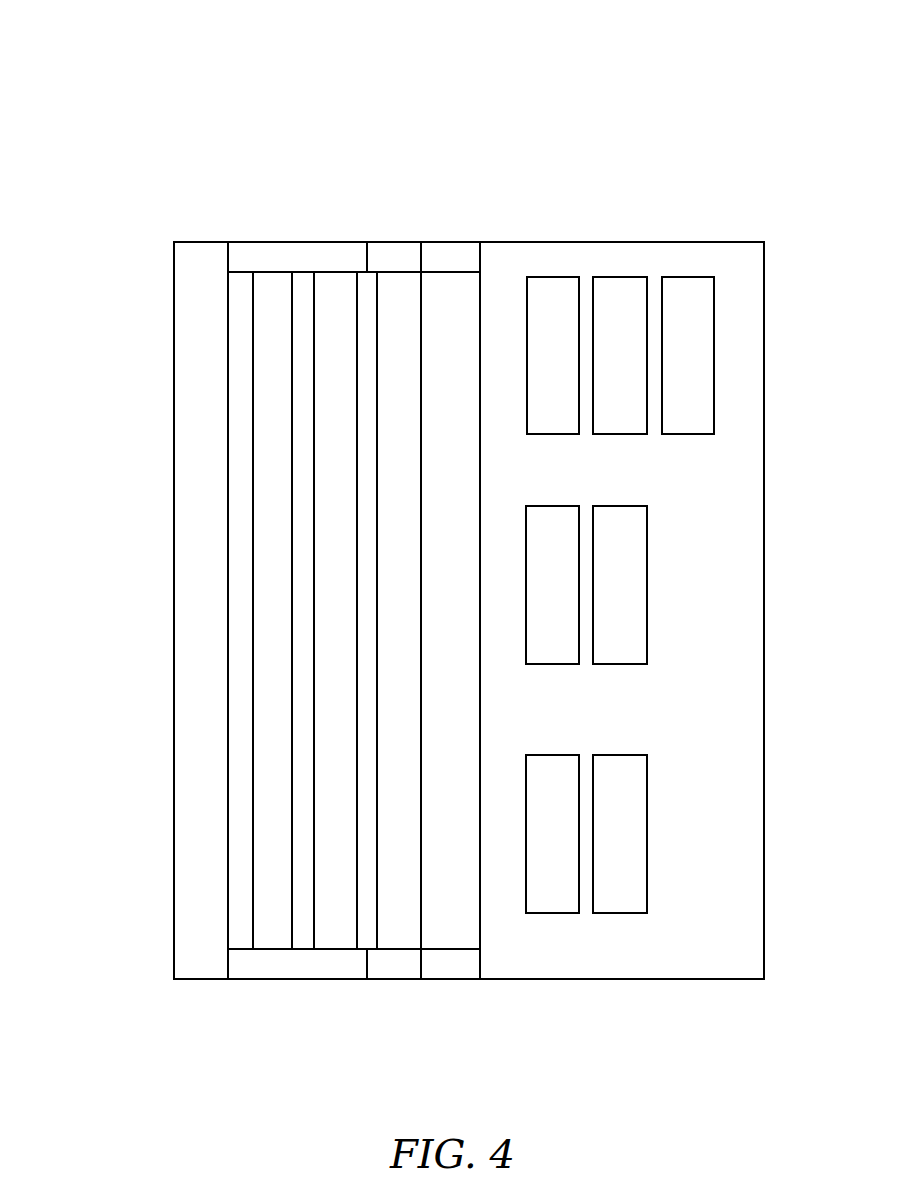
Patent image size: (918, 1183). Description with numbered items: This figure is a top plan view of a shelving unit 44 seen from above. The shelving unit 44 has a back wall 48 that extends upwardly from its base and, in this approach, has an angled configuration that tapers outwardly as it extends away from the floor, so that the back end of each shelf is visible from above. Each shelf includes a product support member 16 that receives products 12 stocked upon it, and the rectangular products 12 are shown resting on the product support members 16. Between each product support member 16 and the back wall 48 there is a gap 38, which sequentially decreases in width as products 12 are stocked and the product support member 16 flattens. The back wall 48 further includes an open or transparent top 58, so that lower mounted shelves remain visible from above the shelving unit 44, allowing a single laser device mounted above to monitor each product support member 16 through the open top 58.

The products 12 is at (548, 277).
The product support member 16 is at (272, 296).
The gap 38 is at (305, 297).
The shelving unit 44 is at (694, 98).
The back wall 48 is at (400, 258).
The open or transparent top 58 is at (271, 521).